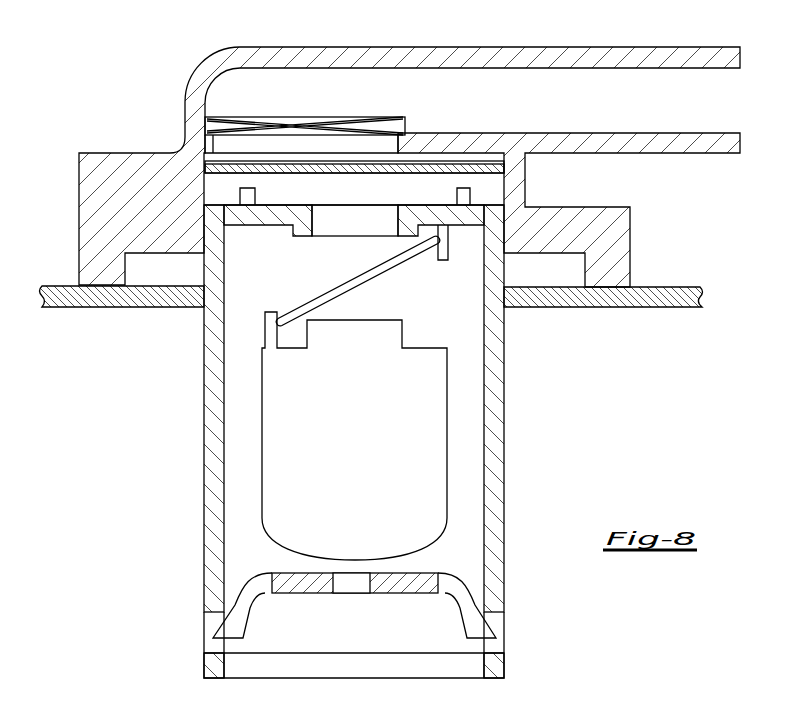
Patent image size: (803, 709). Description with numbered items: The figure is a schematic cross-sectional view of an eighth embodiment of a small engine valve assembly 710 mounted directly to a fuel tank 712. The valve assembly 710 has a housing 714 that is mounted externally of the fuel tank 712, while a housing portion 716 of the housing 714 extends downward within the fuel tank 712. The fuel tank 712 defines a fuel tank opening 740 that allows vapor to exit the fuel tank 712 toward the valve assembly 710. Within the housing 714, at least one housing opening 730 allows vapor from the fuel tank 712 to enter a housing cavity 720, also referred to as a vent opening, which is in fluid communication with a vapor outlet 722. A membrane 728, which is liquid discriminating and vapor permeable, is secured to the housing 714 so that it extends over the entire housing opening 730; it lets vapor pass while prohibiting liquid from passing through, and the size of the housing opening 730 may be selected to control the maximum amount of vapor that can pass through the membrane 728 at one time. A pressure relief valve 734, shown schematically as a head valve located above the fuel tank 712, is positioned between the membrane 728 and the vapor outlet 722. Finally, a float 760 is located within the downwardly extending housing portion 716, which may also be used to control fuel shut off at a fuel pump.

The valve assembly 710 is at (137, 72).
The fuel tank 712 is at (108, 308).
The housing 714 is at (79, 188).
The housing portion 716 is at (204, 470).
The housing cavity 720 is at (293, 102).
The vapor outlet 722 is at (683, 110).
The membrane 728 is at (315, 173).
The housing opening 730 is at (398, 147).
The pressure relief valve 734 is at (233, 103).
The fuel tank opening 740 is at (505, 297).
The float 760 is at (425, 428).